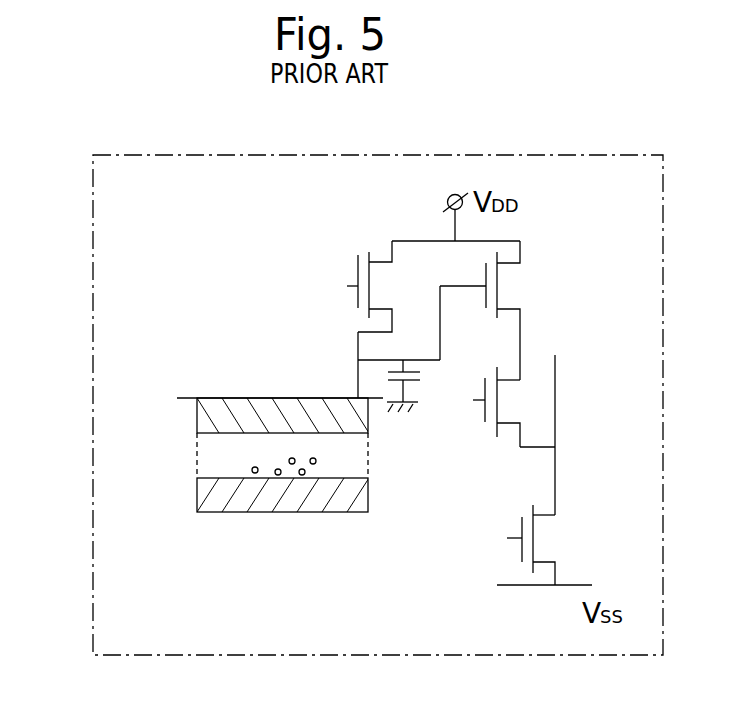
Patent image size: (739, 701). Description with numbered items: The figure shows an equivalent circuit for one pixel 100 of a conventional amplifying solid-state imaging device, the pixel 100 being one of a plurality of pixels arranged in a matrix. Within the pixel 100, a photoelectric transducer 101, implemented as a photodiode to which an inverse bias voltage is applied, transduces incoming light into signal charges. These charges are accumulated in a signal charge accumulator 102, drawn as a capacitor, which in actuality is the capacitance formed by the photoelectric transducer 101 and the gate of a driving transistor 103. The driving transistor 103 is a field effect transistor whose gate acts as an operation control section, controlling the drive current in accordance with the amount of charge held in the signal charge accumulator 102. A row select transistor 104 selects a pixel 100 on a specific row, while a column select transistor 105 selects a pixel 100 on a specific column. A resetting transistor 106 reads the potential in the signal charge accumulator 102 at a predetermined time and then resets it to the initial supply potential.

The pixel 100 is at (92, 302).
The photoelectric transducer 101 is at (215, 398).
The signal charge accumulator 102 is at (410, 382).
The driving transistor 103 is at (498, 283).
The row select transistor 104 is at (497, 427).
The column select transistor 105 is at (520, 547).
The resetting transistor 106 is at (358, 277).